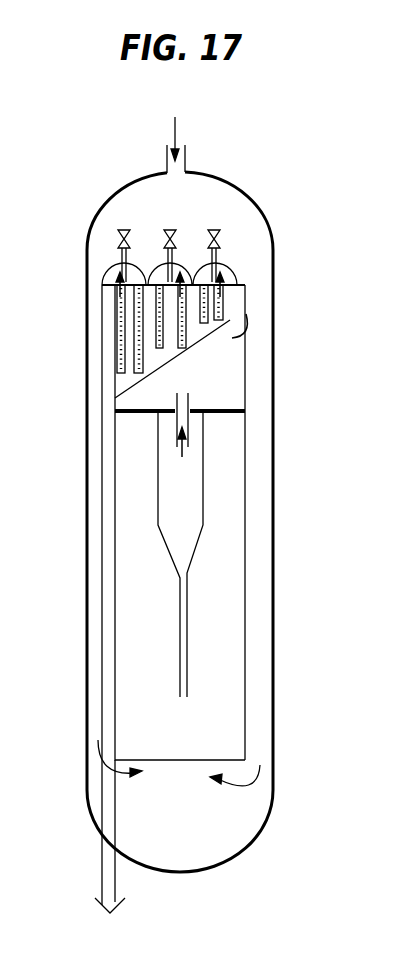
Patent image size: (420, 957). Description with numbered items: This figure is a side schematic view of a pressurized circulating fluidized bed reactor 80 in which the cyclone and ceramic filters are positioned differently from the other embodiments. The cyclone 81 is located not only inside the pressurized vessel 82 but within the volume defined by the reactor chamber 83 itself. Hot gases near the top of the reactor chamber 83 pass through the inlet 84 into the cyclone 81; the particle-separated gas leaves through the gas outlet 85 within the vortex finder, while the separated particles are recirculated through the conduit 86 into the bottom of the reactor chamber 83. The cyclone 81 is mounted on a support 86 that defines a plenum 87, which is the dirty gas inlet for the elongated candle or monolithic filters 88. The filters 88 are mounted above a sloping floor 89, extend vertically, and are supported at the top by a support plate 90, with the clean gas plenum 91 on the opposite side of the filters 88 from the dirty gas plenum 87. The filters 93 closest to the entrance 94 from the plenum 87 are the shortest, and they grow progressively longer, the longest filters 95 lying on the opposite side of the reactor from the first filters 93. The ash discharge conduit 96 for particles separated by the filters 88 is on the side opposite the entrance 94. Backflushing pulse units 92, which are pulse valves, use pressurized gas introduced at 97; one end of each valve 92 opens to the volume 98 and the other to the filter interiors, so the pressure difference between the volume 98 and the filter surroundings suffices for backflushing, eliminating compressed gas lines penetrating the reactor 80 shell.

The pressurized circulating fluidized bed reactor 80 is at (91, 190).
The cyclone 81 is at (209, 499).
The pressurized vessel 82 is at (273, 348).
The reactor chamber 83 is at (124, 487).
The inlet 84 is at (192, 420).
The gas outlet 85 is at (182, 403).
The conduit 86 is at (128, 413).
The plenum 87 is at (231, 396).
The elongated filters 88 is at (113, 343).
The sloping floor 89 is at (137, 377).
The support plate 90 is at (106, 280).
The clean gas plenum 91 is at (131, 280).
The backflushing pulse units 92 is at (178, 232).
The elongated filters closest to the entrance 93 is at (222, 296).
The entrance 94 is at (243, 326).
The longest filters 95 is at (117, 315).
The ash discharge conduit 96 is at (108, 533).
The pressurized gas introduction 97 is at (176, 145).
The volume 98 is at (242, 235).